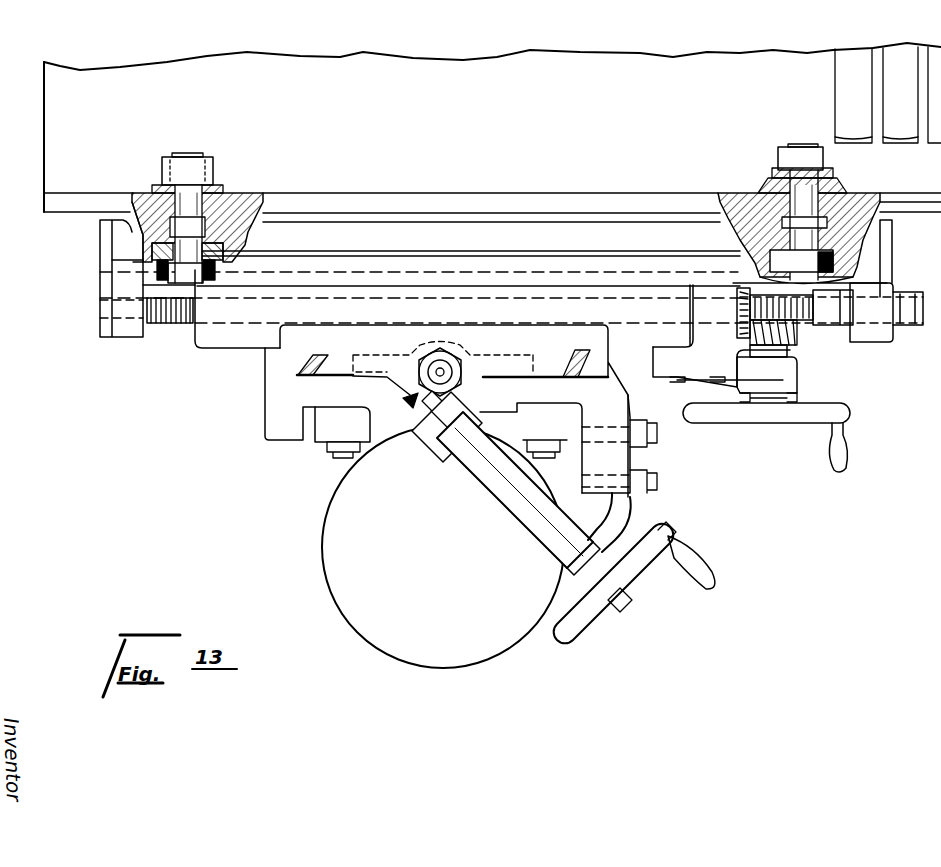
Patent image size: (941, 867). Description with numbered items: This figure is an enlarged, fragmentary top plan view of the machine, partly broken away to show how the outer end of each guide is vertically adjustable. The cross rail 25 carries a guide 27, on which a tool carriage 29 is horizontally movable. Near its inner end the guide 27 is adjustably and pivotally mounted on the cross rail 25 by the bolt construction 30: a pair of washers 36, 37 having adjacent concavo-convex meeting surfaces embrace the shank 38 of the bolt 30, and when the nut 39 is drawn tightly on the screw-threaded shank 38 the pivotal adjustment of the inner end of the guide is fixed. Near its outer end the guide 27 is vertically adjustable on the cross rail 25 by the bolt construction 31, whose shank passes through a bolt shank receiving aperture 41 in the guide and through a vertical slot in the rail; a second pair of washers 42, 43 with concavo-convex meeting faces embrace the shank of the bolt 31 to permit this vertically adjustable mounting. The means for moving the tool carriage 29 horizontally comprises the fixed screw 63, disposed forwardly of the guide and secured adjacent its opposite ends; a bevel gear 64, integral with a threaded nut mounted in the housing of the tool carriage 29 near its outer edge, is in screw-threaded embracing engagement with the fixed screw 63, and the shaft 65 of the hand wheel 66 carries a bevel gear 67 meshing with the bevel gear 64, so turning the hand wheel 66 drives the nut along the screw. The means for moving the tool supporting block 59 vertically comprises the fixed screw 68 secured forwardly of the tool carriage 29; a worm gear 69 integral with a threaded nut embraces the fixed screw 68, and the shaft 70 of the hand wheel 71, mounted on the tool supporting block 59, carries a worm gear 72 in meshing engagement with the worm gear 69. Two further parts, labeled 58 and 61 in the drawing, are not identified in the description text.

The cross rail 25 is at (450, 143).
The guide 27 is at (500, 240).
The tool carriage 29 is at (222, 347).
The bolt construction 30 is at (190, 170).
The bolt construction 31 is at (778, 160).
The washer 36 is at (143, 240).
The washer 37 is at (212, 257).
The shank 38 is at (187, 200).
The nut 39 is at (190, 283).
The bolt shank receiving aperture 41 is at (880, 232).
The washer 42 is at (833, 172).
The washer 43 is at (847, 186).
The cross slide 58 is at (315, 357).
The tool supporting block 59 is at (362, 431).
The hand wheel 61 is at (443, 547).
The fixed screw 63 is at (170, 326).
The bevel gear 64 is at (740, 305).
The shaft 65 is at (790, 352).
The hand wheel 66 is at (762, 418).
The bevel gear 67 is at (797, 333).
The fixed screw 68 is at (455, 360).
The worm gear 69 is at (454, 370).
The shaft 70 is at (490, 466).
The hand wheel 71 is at (585, 640).
The worm gear 72 is at (410, 405).